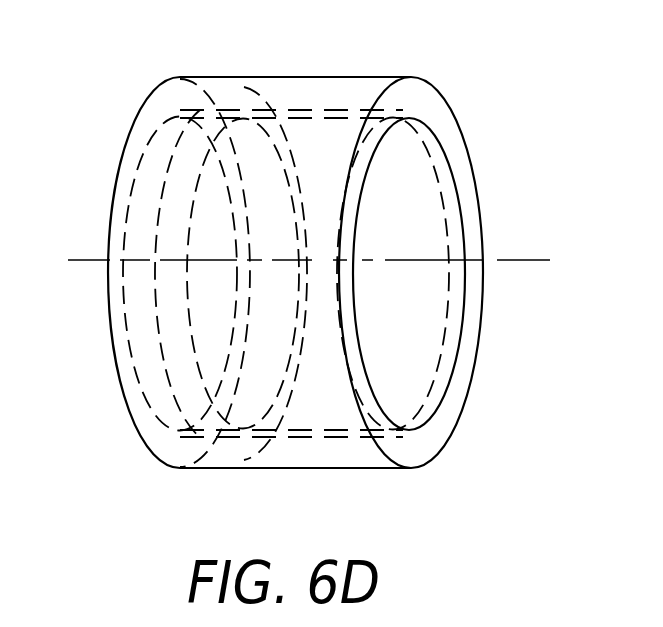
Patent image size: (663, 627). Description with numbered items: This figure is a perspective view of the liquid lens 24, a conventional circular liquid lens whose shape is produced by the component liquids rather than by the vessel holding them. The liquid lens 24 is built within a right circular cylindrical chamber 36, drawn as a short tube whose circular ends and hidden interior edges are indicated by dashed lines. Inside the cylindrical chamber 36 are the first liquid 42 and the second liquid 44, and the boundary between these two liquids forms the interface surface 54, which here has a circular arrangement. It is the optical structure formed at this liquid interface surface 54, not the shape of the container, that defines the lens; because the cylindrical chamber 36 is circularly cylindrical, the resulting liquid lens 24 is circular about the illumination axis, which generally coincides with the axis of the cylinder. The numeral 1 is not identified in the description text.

The tubular ring body 1 is at (532, 262).
The liquid lens 24 is at (350, 111).
The cylindrical chamber 36 is at (228, 468).
The first liquid 42 is at (180, 158).
The second liquid 44 is at (327, 447).
The interface surface 54 is at (242, 83).